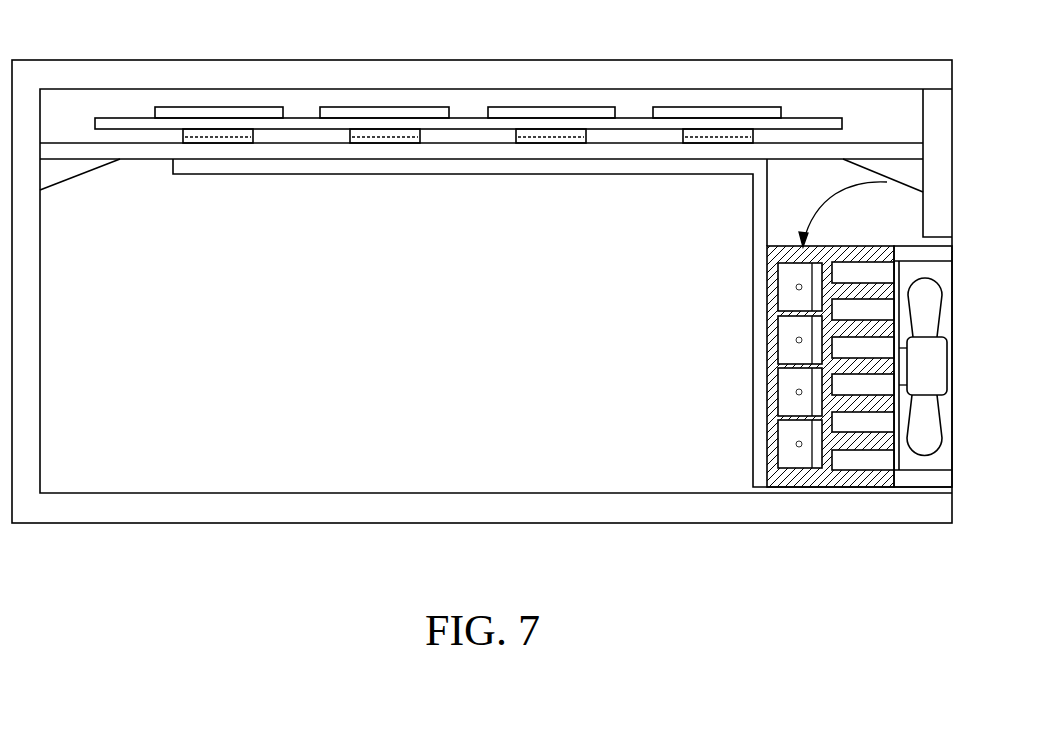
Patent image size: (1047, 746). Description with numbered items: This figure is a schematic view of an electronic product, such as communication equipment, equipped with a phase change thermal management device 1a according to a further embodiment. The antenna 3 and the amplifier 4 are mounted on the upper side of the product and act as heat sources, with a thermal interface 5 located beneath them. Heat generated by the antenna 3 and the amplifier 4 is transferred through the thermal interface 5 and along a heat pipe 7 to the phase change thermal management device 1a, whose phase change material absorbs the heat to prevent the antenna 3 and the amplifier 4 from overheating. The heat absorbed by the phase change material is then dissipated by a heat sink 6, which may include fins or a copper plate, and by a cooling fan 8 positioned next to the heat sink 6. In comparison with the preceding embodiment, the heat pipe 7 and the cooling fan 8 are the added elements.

The phase change thermal management device 1a is at (905, 185).
The antenna 3 is at (727, 115).
The amplifier 4 is at (683, 131).
The thermal interface 5 is at (713, 143).
The heat sink 6 is at (880, 247).
The heat pipe 7 is at (573, 174).
The cooling fan 8 is at (942, 365).